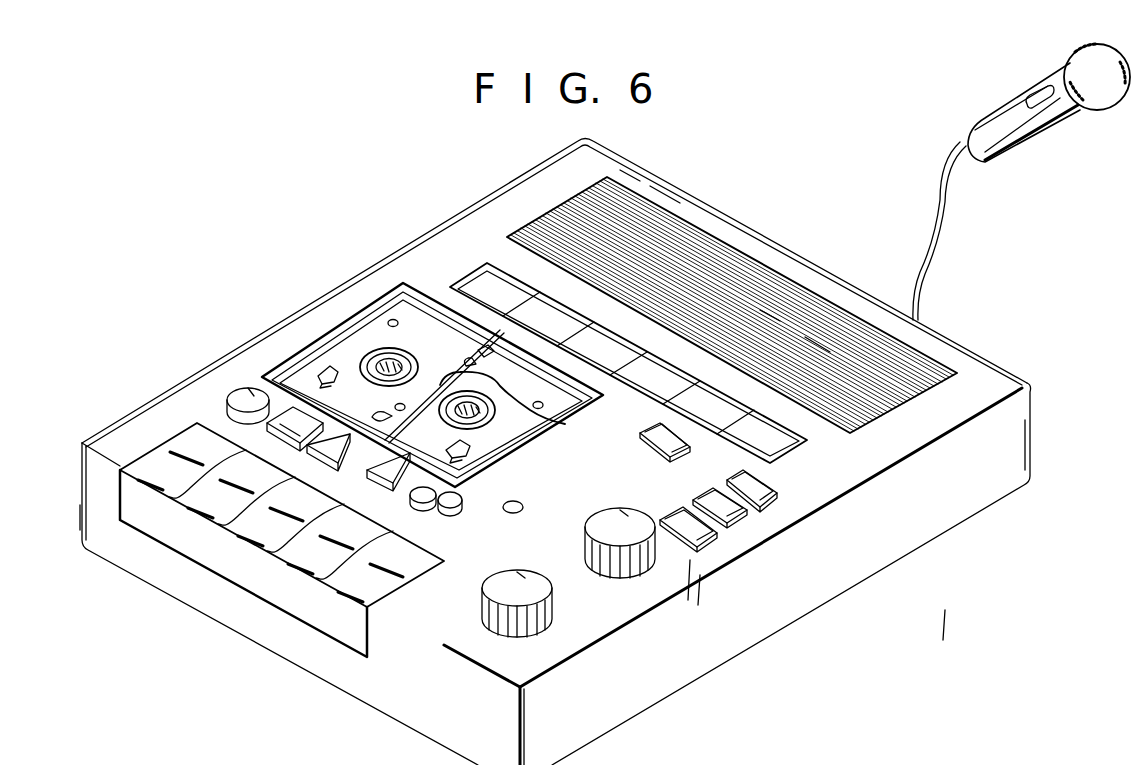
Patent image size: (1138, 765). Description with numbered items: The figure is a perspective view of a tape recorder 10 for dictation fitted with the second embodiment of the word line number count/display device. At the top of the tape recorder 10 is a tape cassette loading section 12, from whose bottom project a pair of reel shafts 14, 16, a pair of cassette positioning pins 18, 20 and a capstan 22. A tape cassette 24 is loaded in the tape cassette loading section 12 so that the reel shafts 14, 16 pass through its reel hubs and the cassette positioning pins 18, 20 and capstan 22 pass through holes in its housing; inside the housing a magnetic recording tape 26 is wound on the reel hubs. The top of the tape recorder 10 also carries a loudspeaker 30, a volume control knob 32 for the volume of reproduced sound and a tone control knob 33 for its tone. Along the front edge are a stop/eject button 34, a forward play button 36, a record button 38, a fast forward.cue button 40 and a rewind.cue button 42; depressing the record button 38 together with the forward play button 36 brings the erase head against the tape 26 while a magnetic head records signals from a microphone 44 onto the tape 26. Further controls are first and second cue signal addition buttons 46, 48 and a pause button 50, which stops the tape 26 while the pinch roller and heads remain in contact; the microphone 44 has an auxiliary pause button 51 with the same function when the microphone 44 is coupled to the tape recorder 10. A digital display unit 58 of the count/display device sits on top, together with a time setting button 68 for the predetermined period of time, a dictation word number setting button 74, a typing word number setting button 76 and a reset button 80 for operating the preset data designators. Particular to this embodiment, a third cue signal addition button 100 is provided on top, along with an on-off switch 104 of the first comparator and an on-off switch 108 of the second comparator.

The tape recorder 10 is at (738, 224).
The tape cassette loading section 12 is at (273, 376).
The reel shaft 14 is at (378, 360).
The reel shaft 16 is at (466, 425).
The cassette positioning pin 18 is at (330, 378).
The cassette positioning pin 20 is at (460, 458).
The capstan 22 is at (388, 420).
The tape cassette 24 is at (513, 427).
The magnetic recording tape 26 is at (548, 422).
The loudspeaker 30 is at (833, 296).
The volume control knob 32 is at (490, 584).
The tone control knob 33 is at (612, 518).
The stop/eject button 34 is at (133, 505).
The forward play button 36 is at (185, 530).
The record button 38 is at (237, 557).
The fast forward.cue button 40 is at (286, 583).
The rewind.cue button 42 is at (338, 608).
The microphone 44 is at (1066, 64).
The first cue signal addition button 46 is at (230, 398).
The second cue signal addition button 48 is at (328, 457).
The pause button 50 is at (268, 430).
The auxiliary pause button 51 is at (1050, 99).
The digital display unit 58 is at (798, 447).
The time setting button 68 is at (736, 476).
The dictation word number setting button 74 is at (704, 496).
The typing word number setting button 76 is at (668, 516).
The reset button 80 is at (650, 426).
The third cue signal addition button 100 is at (380, 480).
The on-off switch 104 is at (423, 505).
The on-off switch 108 is at (456, 513).